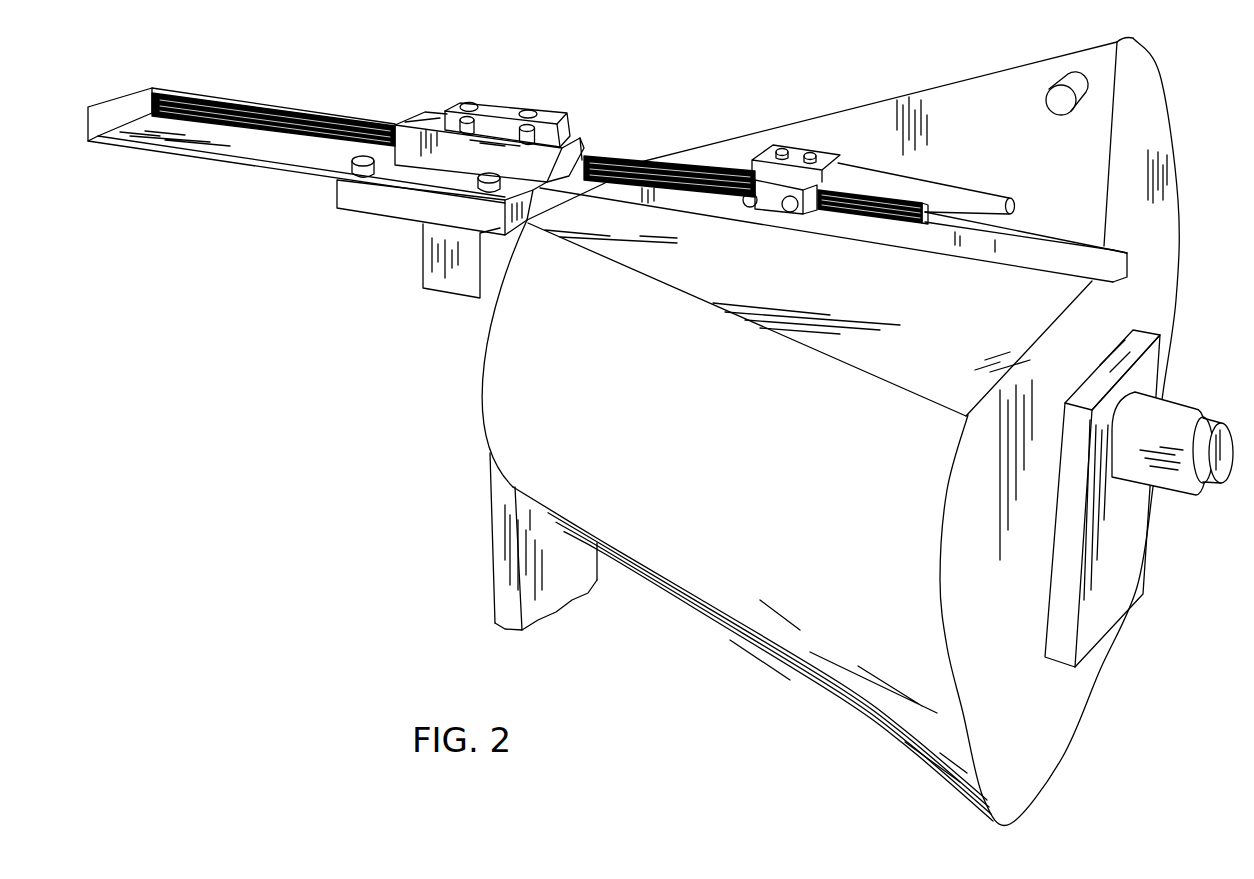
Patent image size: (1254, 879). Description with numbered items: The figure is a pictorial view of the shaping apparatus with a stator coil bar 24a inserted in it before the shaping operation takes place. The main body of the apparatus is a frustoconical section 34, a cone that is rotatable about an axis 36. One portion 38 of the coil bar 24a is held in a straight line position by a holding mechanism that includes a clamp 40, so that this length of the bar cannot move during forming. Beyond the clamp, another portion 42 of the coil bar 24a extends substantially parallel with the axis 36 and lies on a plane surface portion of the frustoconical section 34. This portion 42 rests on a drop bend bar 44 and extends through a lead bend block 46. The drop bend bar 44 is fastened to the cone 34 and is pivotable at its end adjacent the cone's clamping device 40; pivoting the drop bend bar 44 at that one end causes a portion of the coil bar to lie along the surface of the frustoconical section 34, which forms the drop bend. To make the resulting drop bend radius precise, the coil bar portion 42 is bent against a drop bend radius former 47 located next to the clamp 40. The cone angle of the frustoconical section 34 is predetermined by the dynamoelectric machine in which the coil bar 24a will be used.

The frustoconical section 34 is at (1140, 46).
The axis 36 is at (1188, 398).
The portion of coil bar 38 is at (283, 117).
The coil bar 24a is at (356, 124).
The clamp 40 is at (510, 108).
The drop bend radius former 47 is at (581, 142).
The portion of coil bar 42 is at (727, 180).
The lead bend block 46 is at (877, 187).
The drop bend bar 44 is at (718, 210).